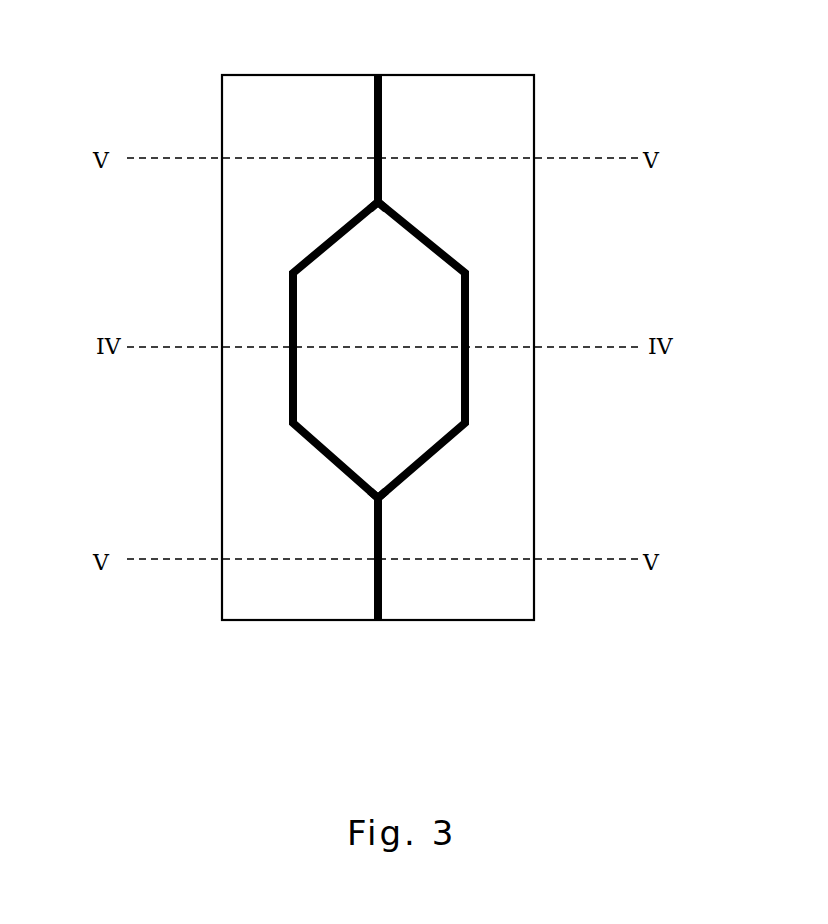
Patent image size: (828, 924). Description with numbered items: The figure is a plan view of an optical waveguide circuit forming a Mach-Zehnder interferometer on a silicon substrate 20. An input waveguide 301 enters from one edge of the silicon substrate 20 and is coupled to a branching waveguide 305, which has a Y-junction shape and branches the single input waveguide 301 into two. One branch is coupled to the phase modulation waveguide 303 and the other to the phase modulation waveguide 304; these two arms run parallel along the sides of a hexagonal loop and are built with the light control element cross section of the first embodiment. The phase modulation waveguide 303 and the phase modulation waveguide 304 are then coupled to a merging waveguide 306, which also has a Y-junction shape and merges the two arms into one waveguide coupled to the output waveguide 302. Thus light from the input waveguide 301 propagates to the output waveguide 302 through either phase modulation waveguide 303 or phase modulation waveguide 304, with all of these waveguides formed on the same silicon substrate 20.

The silicon substrate 20 is at (235, 603).
The input waveguide 301 is at (383, 123).
The output waveguide 302 is at (382, 600).
The phase modulation waveguide 303 is at (287, 302).
The phase modulation waveguide 304 is at (468, 302).
The branching waveguide 305 is at (383, 202).
The merging waveguide 306 is at (383, 500).